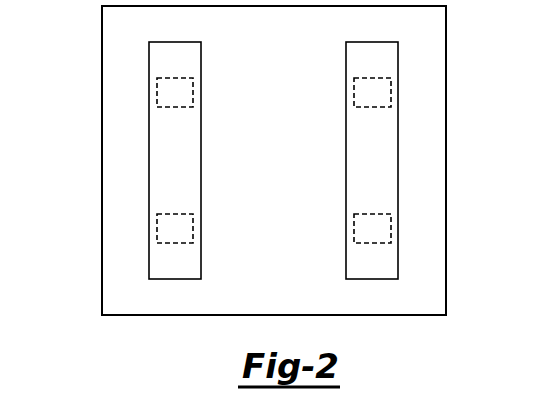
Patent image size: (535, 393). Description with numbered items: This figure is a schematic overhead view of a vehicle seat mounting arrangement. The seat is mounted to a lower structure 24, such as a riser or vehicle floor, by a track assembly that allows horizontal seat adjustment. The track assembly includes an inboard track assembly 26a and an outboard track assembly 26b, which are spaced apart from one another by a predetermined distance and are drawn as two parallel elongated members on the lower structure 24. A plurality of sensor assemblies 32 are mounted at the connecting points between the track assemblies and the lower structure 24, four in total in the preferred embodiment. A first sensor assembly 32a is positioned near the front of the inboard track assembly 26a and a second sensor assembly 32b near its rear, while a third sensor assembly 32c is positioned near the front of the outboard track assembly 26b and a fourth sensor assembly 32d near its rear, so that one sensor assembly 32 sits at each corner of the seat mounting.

The lower structure 24 is at (446, 175).
The inboard track assembly 26a is at (174, 296).
The outboard track assembly 26b is at (378, 298).
The sensor assemblies 32 is at (274, 155).
The first sensor assembly 32a is at (157, 92).
The second sensor assembly 32b is at (157, 228).
The third sensor assembly 32c is at (398, 92).
The fourth sensor assembly 32d is at (398, 232).